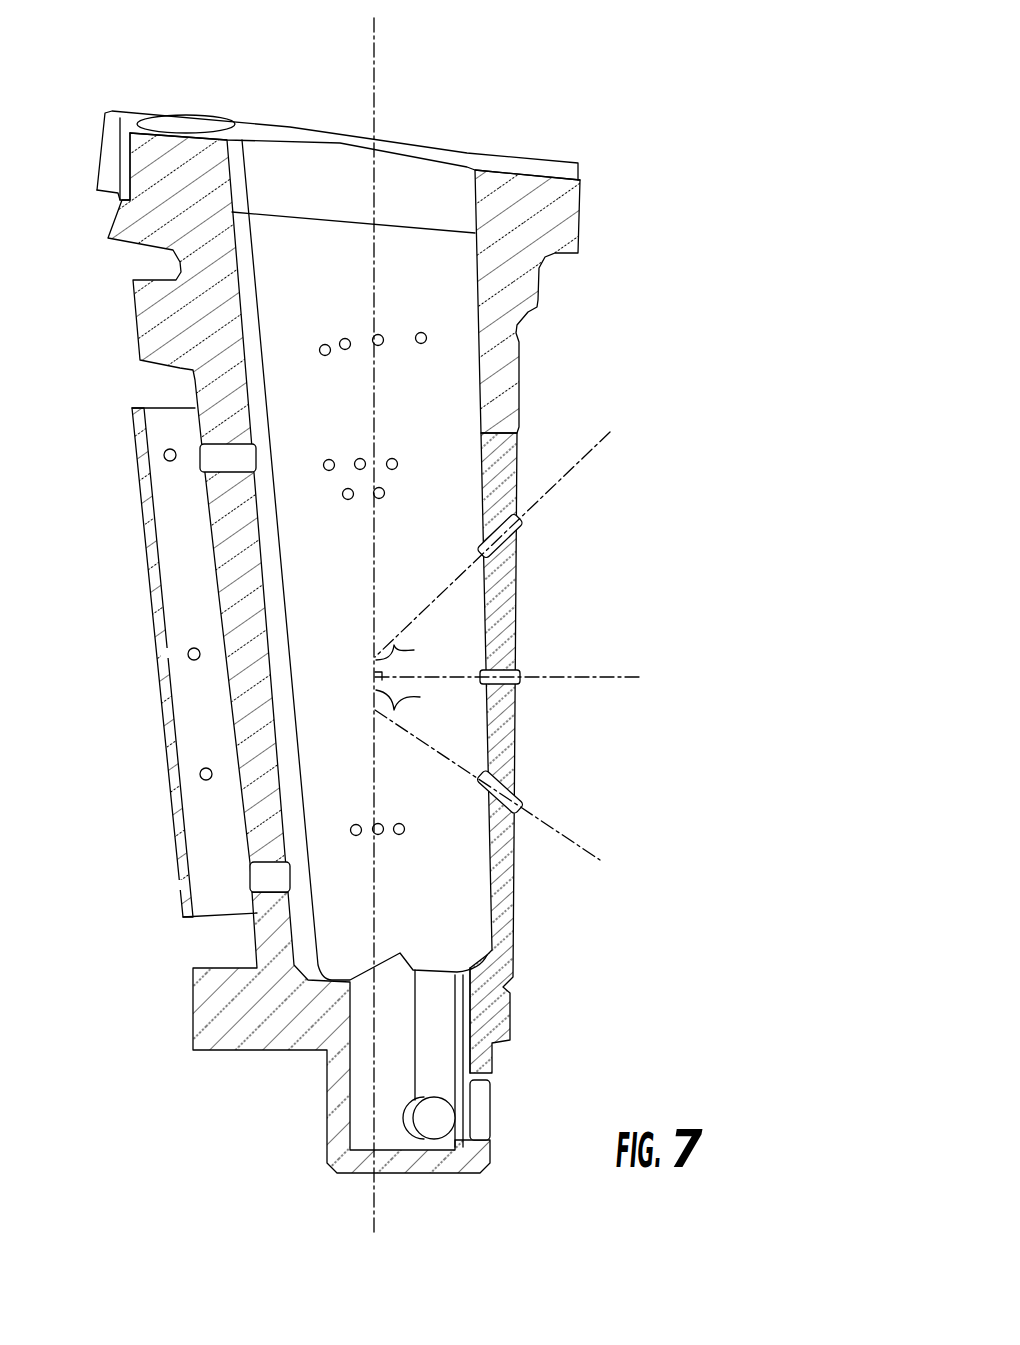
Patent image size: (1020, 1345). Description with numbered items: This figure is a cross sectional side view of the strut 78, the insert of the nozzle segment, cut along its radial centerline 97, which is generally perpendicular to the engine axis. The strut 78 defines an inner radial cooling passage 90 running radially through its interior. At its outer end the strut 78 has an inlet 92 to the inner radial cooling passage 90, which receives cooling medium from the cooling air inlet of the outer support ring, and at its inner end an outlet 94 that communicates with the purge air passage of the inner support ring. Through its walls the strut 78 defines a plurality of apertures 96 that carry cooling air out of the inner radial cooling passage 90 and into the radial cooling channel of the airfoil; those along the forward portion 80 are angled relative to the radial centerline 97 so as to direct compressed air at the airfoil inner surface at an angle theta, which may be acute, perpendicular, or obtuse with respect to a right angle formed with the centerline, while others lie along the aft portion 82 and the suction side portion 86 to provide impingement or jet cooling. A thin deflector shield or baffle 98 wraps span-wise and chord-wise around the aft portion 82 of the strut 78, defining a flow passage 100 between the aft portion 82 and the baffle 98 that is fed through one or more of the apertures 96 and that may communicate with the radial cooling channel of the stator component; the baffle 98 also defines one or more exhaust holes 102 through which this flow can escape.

The strut 78 is at (356, 634).
The forward portion 80 is at (545, 612).
The aft portion 82 is at (215, 591).
The suction side portion 86 is at (429, 141).
The inner radial cooling passage 90 is at (402, 585).
The inlet 92 is at (311, 141).
The outlet 94 is at (470, 1119).
The apertures 96 is at (252, 871).
The radial centerline 97 is at (374, 78).
The baffle 98 is at (158, 662).
The flow passage 100 is at (200, 697).
The exhaust holes 102 is at (164, 458).